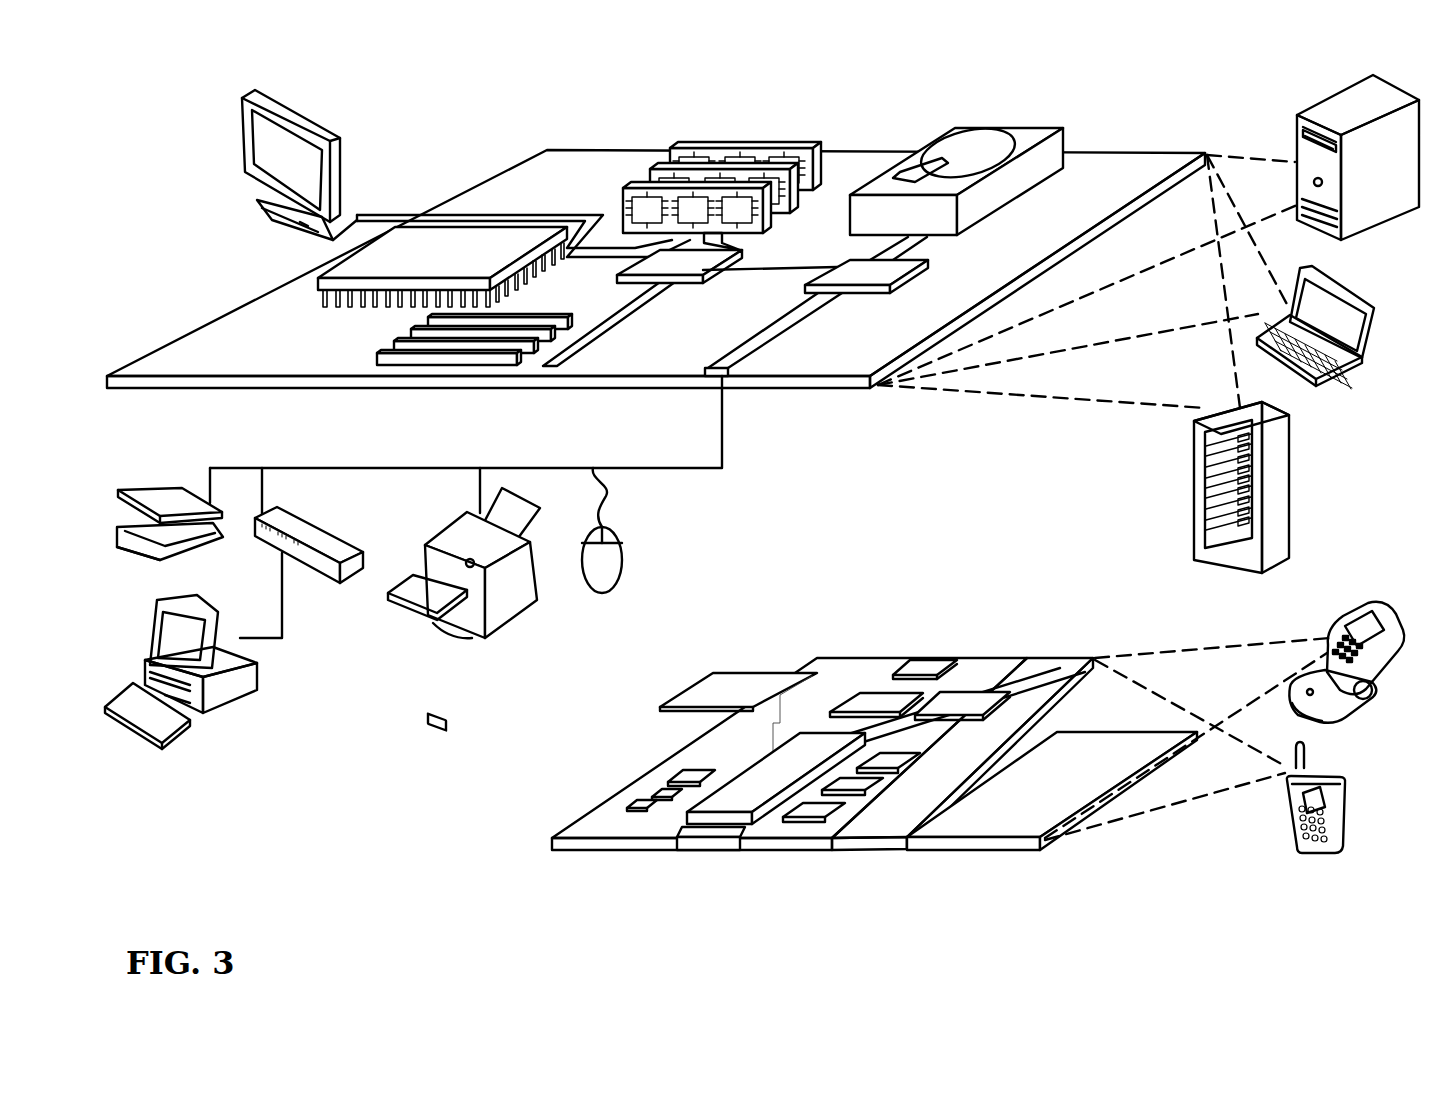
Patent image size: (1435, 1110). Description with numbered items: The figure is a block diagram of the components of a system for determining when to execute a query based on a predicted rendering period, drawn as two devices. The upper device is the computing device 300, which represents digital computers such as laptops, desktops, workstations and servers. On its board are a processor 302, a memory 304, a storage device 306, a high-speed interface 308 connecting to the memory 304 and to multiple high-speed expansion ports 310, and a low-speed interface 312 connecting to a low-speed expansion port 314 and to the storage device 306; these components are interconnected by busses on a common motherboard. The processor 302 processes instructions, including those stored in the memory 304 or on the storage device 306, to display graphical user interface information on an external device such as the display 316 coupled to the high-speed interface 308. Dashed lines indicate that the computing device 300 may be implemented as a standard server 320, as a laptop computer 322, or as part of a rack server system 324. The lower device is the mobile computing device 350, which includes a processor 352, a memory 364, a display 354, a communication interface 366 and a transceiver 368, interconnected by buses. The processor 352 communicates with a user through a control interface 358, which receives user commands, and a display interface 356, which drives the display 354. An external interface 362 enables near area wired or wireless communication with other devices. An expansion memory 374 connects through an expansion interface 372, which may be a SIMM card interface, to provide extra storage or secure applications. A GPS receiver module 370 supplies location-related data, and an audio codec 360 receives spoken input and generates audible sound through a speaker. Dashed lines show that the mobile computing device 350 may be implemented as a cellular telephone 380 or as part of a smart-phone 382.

The computing device 300 is at (461, 120).
The processor 302 is at (326, 282).
The memory 304 is at (684, 150).
The storage device 306 is at (937, 128).
The high-speed interface 308 is at (650, 262).
The high-speed expansion ports 310 is at (397, 346).
The low-speed interface 312 is at (842, 268).
The low-speed expansion port 314 is at (736, 376).
The display 316 is at (246, 95).
The standard server 320 is at (1295, 133).
The laptop computer 322 is at (1374, 312).
The rack server system 324 is at (1196, 515).
The mobile computing device 350 is at (518, 853).
The processor 352 is at (745, 806).
The display 354 is at (1007, 822).
The display interface 356 is at (818, 812).
The control interface 358 is at (856, 792).
The audio codec 360 is at (887, 765).
The external interface 362 is at (708, 838).
The memory 364 is at (660, 796).
The communication interface 366 is at (877, 702).
The transceiver 368 is at (963, 702).
The GPS receiver module 370 is at (935, 665).
The expansion interface 372 is at (800, 673).
The expansion memory 374 is at (713, 673).
The cellular telephone 380 is at (1347, 627).
The smart-phone 382 is at (1287, 803).